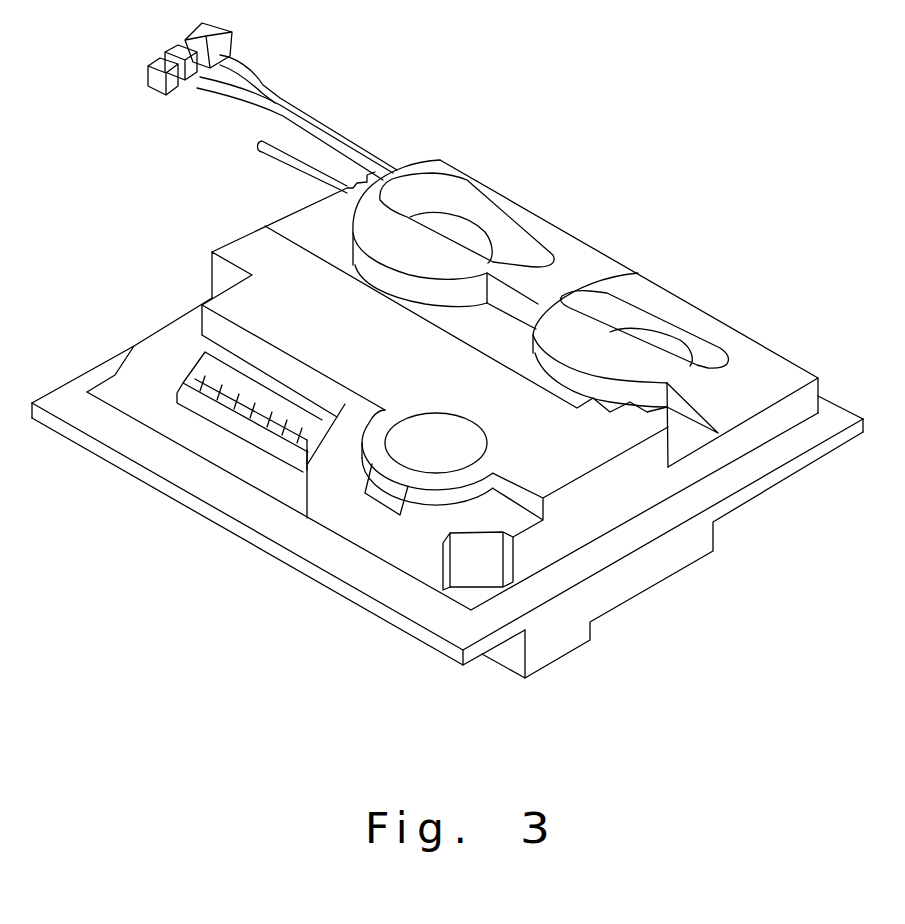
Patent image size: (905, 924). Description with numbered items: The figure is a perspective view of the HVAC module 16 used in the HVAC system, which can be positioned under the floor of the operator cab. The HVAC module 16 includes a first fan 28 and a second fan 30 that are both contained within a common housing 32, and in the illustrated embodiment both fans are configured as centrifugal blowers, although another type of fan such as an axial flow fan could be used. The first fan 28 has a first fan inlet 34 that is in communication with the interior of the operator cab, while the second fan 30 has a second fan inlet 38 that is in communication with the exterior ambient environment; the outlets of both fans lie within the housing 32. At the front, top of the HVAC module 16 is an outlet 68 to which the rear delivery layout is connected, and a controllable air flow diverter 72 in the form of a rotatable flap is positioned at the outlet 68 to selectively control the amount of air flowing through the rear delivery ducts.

The HVAC module 16 is at (160, 258).
The first fan 28 is at (503, 222).
The second fan 30 is at (690, 328).
The common housing 32 is at (440, 519).
The first fan inlet 34 is at (467, 185).
The second fan inlet 38 is at (655, 278).
The outlet 68 is at (194, 373).
The controllable air flow diverter 72 is at (224, 412).